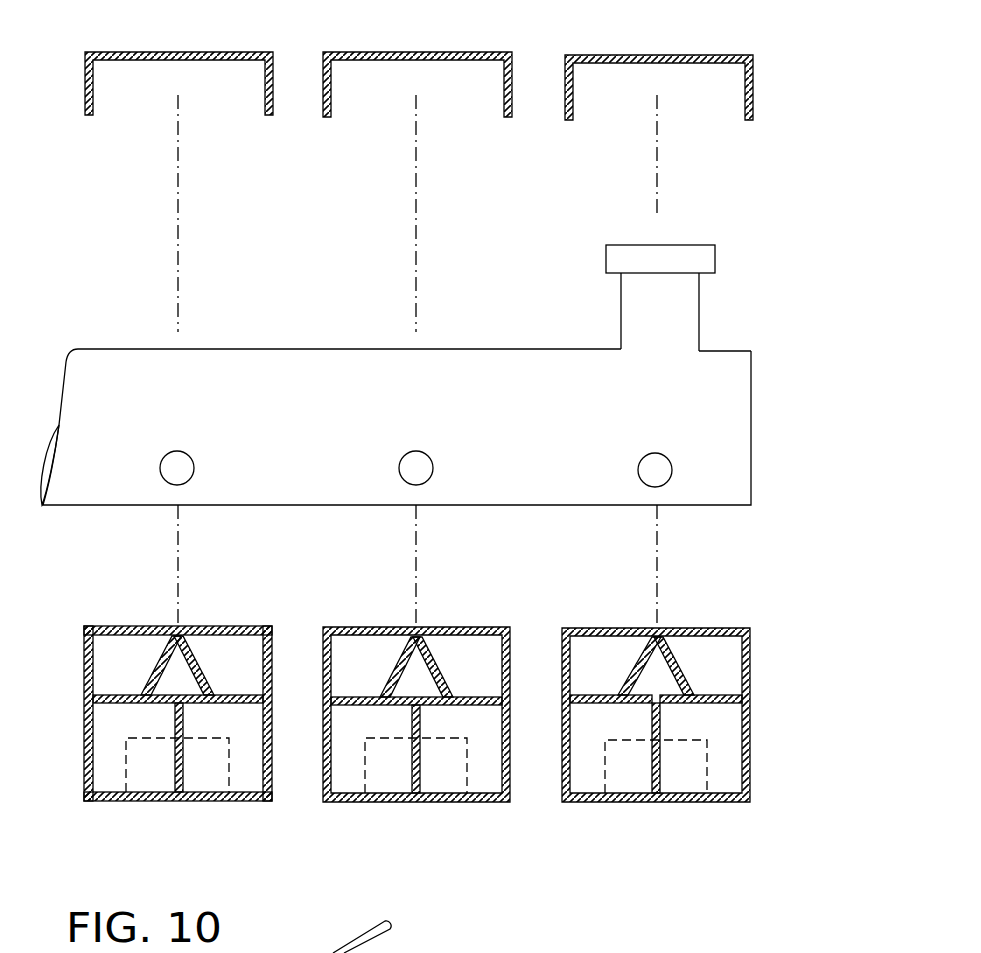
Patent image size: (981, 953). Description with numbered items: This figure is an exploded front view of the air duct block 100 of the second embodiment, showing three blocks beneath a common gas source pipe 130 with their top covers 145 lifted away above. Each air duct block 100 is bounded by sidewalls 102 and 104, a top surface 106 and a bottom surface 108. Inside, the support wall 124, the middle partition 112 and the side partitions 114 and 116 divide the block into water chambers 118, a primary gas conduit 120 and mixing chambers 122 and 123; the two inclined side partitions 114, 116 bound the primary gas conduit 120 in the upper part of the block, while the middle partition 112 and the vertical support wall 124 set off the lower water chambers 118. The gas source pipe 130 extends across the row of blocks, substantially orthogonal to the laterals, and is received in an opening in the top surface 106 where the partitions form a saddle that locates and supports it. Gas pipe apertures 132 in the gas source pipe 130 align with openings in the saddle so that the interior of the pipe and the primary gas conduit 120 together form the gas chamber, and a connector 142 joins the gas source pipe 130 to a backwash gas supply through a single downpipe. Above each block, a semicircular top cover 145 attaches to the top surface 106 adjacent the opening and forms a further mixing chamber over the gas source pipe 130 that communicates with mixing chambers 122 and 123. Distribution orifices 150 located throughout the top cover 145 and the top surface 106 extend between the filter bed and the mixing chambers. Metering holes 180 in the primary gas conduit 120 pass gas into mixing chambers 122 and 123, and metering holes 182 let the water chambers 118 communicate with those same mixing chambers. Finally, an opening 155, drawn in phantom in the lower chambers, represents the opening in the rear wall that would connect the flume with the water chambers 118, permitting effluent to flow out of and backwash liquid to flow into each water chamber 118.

The air duct block 100 is at (158, 814).
The sidewall 102 is at (85, 703).
The sidewall 104 is at (265, 743).
The top surface 106 is at (188, 628).
The bottom surface 108 is at (177, 803).
The middle partition 112 is at (160, 703).
The side partition 114 is at (152, 672).
The side partition 116 is at (203, 673).
The water chamber 118 is at (380, 736).
The primary gas conduit 120 is at (437, 689).
The mixing chamber 122 is at (488, 676).
The mixing chamber 123 is at (378, 676).
The support wall 124 is at (180, 762).
The gas source pipe 130 is at (751, 458).
The gas pipe aperture 132 is at (182, 462).
The connector 142 is at (687, 318).
The top cover 145 is at (262, 52).
The distribution orifice 150 is at (203, 51).
The opening 155 is at (148, 775).
The metering hole 180 is at (677, 662).
The metering hole 182 is at (718, 703).